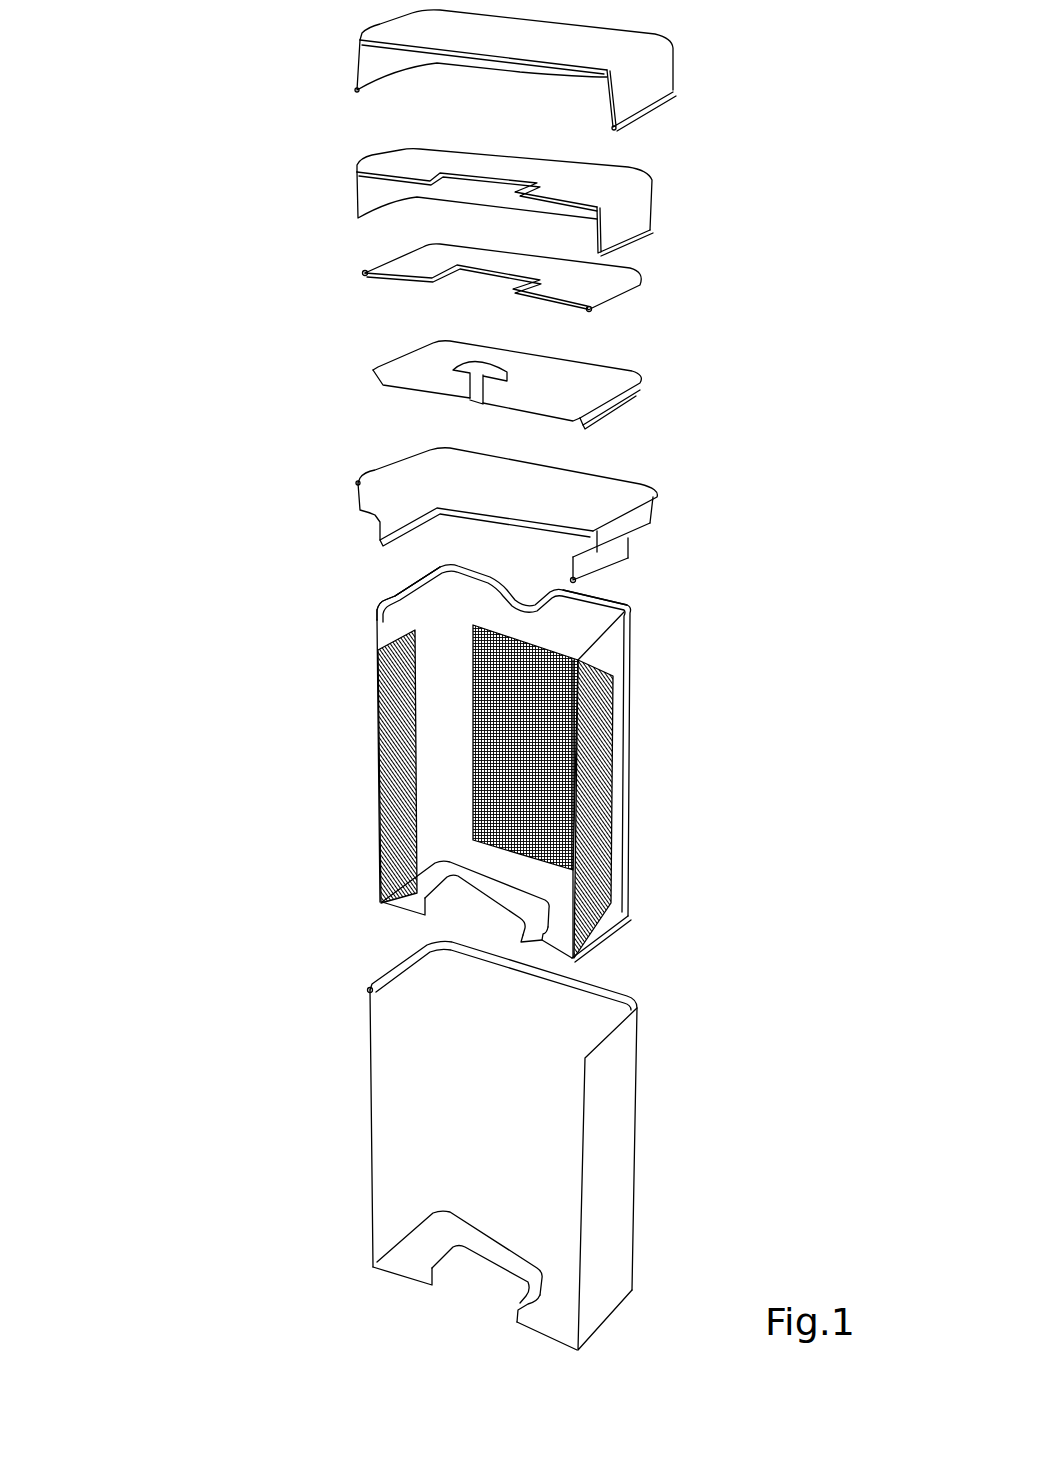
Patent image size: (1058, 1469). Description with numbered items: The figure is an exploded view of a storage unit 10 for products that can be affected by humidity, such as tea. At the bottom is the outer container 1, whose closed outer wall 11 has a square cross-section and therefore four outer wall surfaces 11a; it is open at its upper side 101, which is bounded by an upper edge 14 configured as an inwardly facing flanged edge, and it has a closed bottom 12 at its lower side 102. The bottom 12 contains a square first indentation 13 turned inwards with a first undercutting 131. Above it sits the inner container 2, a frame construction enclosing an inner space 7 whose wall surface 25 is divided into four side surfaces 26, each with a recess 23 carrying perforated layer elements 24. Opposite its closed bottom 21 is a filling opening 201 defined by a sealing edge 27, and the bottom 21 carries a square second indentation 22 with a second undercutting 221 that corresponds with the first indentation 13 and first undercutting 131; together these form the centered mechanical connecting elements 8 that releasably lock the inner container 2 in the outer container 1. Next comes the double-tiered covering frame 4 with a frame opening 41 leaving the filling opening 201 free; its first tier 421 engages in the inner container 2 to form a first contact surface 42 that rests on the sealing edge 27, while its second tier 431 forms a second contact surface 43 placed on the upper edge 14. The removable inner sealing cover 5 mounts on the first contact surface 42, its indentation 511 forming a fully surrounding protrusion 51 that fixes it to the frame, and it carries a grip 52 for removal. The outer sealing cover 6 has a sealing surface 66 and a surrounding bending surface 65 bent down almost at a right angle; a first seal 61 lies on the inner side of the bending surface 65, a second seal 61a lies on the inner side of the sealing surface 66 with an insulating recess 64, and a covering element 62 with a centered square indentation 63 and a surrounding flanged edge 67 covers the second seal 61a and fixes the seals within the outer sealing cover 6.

The outer container 1 is at (492, 1149).
The storage unit 10 is at (185, 262).
The upper side 101 is at (412, 935).
The lower side 102 is at (383, 1300).
The outer wall 11 is at (506, 1132).
The outer wall surfaces 11a is at (603, 1016).
The bottom 12 is at (552, 1318).
The first indentation 13 is at (465, 1270).
The first undercutting 131 is at (540, 1298).
The upper edge 14 is at (373, 985).
The inner container 2 is at (504, 768).
The filling opening 201 is at (447, 590).
The closed bottom 21 is at (548, 930).
The second indentation 22 is at (465, 893).
The second undercutting 221 is at (545, 942).
The recess 23 is at (425, 645).
The perforated layer elements 24 is at (592, 793).
The wall surface 25 is at (455, 805).
The side surfaces 26 is at (428, 623).
The sealing edge 27 is at (420, 588).
The covering frame 4 is at (548, 502).
The frame opening 41 is at (490, 538).
The first contact surface 42 is at (625, 555).
The first tier 421 is at (582, 568).
The second contact surface 43 is at (648, 500).
The second tier 431 is at (630, 524).
The inner sealing cover 5 is at (548, 376).
The protrusion 51 is at (612, 397).
The indentation 511 is at (587, 404).
The grip 52 is at (470, 364).
The outer sealing cover 6 is at (495, 65).
The first seal 61 is at (493, 188).
The second seal 61a is at (568, 176).
The covering element 62 is at (509, 275).
The indentation 63 is at (467, 272).
The insulating recess 64 is at (430, 182).
The bending surface 65 is at (383, 60).
The sealing surface 66 is at (520, 33).
The flanged edge 67 is at (610, 302).
The inner space 7 is at (505, 765).
The connecting elements 8 is at (520, 912).